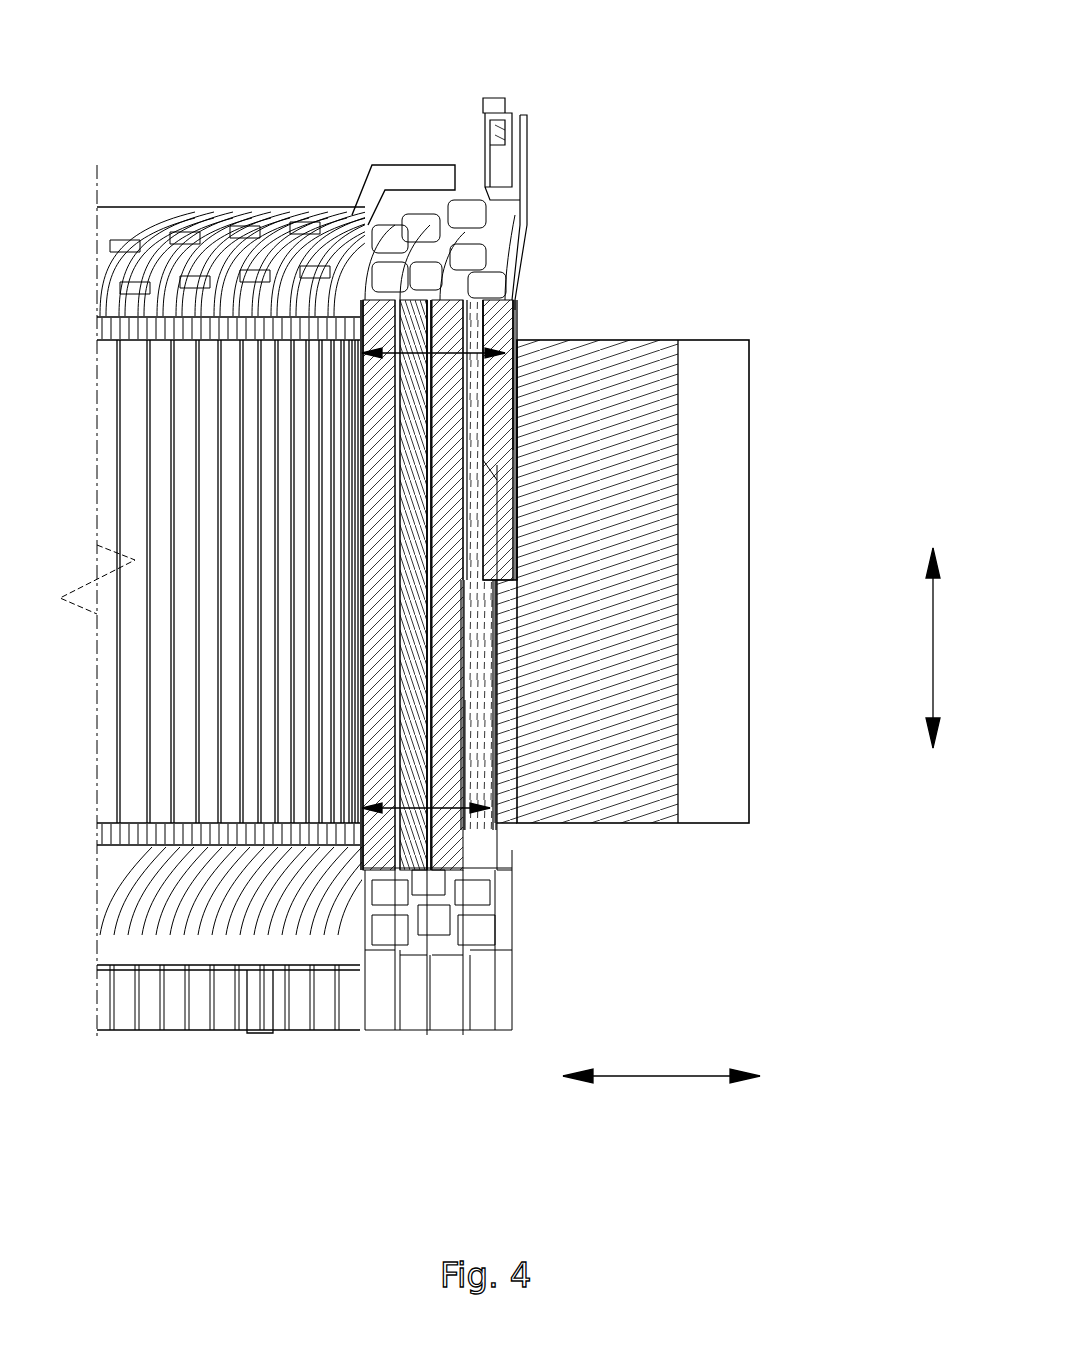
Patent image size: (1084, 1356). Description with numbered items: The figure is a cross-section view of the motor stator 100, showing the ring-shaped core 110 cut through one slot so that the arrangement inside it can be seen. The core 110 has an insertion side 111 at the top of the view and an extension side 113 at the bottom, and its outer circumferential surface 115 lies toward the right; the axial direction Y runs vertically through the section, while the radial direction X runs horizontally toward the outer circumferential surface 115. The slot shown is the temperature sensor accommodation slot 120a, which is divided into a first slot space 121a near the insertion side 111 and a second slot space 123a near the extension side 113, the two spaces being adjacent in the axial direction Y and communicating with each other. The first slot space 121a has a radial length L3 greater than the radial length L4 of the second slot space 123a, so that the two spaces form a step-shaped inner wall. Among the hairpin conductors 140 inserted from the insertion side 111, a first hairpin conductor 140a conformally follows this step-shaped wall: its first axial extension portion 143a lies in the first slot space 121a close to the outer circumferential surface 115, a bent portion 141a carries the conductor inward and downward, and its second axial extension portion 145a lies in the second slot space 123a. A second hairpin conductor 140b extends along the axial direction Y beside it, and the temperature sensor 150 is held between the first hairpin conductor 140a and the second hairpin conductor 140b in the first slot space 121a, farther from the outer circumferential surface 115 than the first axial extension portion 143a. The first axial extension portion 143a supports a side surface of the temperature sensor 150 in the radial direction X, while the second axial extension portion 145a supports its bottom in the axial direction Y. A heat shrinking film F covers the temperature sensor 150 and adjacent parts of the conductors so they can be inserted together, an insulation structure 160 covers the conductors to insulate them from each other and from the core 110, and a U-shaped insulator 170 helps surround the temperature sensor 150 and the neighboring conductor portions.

The motor stator 100 is at (500, 573).
The core 110 is at (699, 530).
The insertion side 111 is at (528, 263).
The extension side 113 is at (525, 855).
The outer circumferential surface 115 is at (750, 690).
The temperature sensor accommodation slot 120a is at (695, 581).
The first slot space 121a is at (545, 565).
The second slot space 123a is at (527, 642).
The hairpin conductors 140 is at (462, 648).
The first hairpin conductor 140a is at (480, 500).
The second hairpin conductor 140b is at (463, 330).
The bent portion 141a is at (655, 440).
The first axial extension portion 143a is at (505, 405).
The second axial extension portion 145a is at (480, 797).
The temperature sensor 150 is at (472, 356).
The insulation structure 160 is at (360, 507).
The U-shaped insulator 170 is at (508, 362).
The radial length L3 is at (362, 350).
The radial length L4 is at (447, 810).
The heat shrinking film F is at (500, 470).
The radial direction X is at (661, 1091).
The axial direction Y is at (942, 648).